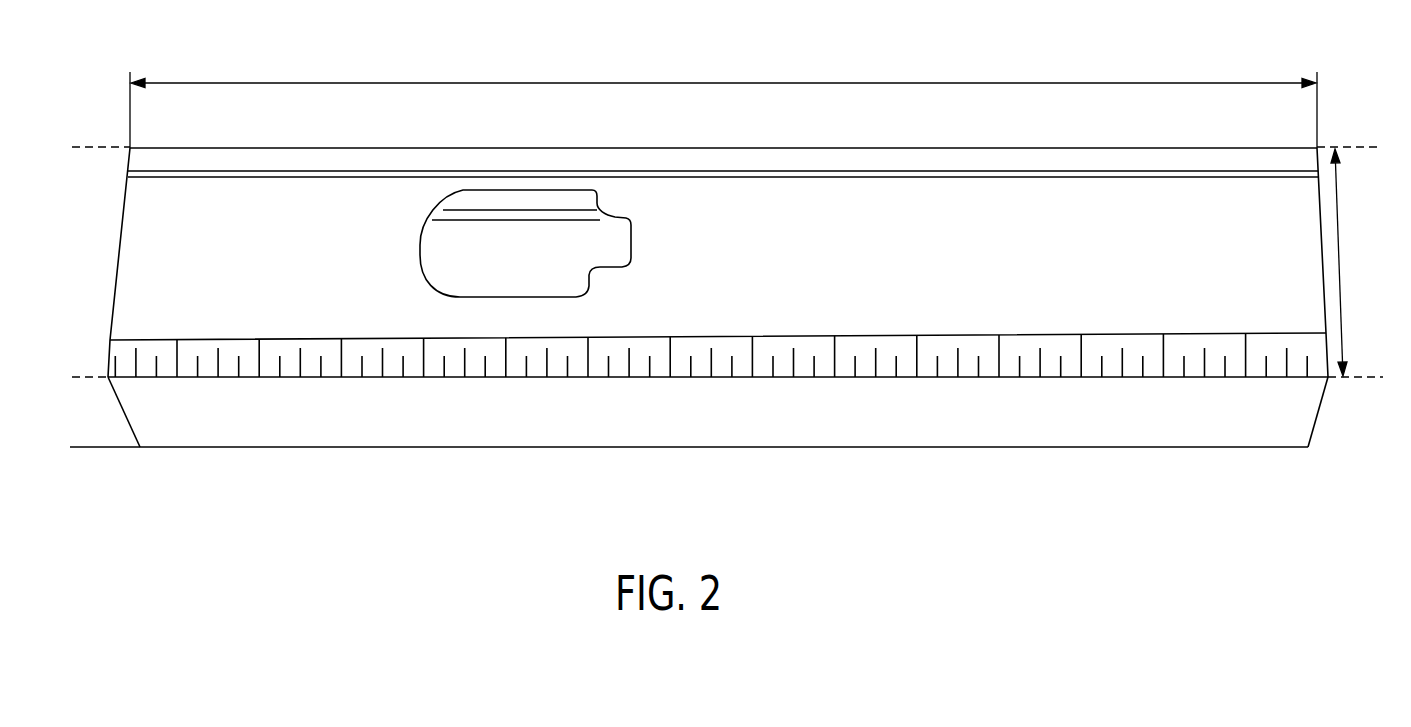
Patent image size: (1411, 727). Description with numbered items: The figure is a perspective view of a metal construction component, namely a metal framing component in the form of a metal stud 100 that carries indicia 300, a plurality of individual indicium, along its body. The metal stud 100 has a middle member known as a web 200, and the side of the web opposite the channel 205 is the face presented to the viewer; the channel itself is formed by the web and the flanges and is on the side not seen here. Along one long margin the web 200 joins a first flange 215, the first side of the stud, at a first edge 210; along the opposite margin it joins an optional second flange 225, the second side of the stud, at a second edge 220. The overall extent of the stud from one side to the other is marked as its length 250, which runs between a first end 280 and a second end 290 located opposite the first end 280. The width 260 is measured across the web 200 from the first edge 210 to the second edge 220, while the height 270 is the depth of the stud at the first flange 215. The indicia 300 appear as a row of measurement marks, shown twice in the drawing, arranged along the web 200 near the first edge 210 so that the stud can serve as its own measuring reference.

The metal stud 100 is at (340, 484).
The web 200 is at (755, 205).
The side of the web opposite the channel 205 is at (921, 196).
The first edge 210 is at (91, 364).
The first flange 215 is at (1323, 434).
The second edge 220 is at (100, 135).
The second flange 225 is at (1178, 108).
The length 250 is at (547, 83).
The width 260 is at (1338, 230).
The height 270 is at (83, 391).
The first end 280 is at (108, 259).
The second end 290 is at (1340, 265).
The indicia 300 is at (750, 308).